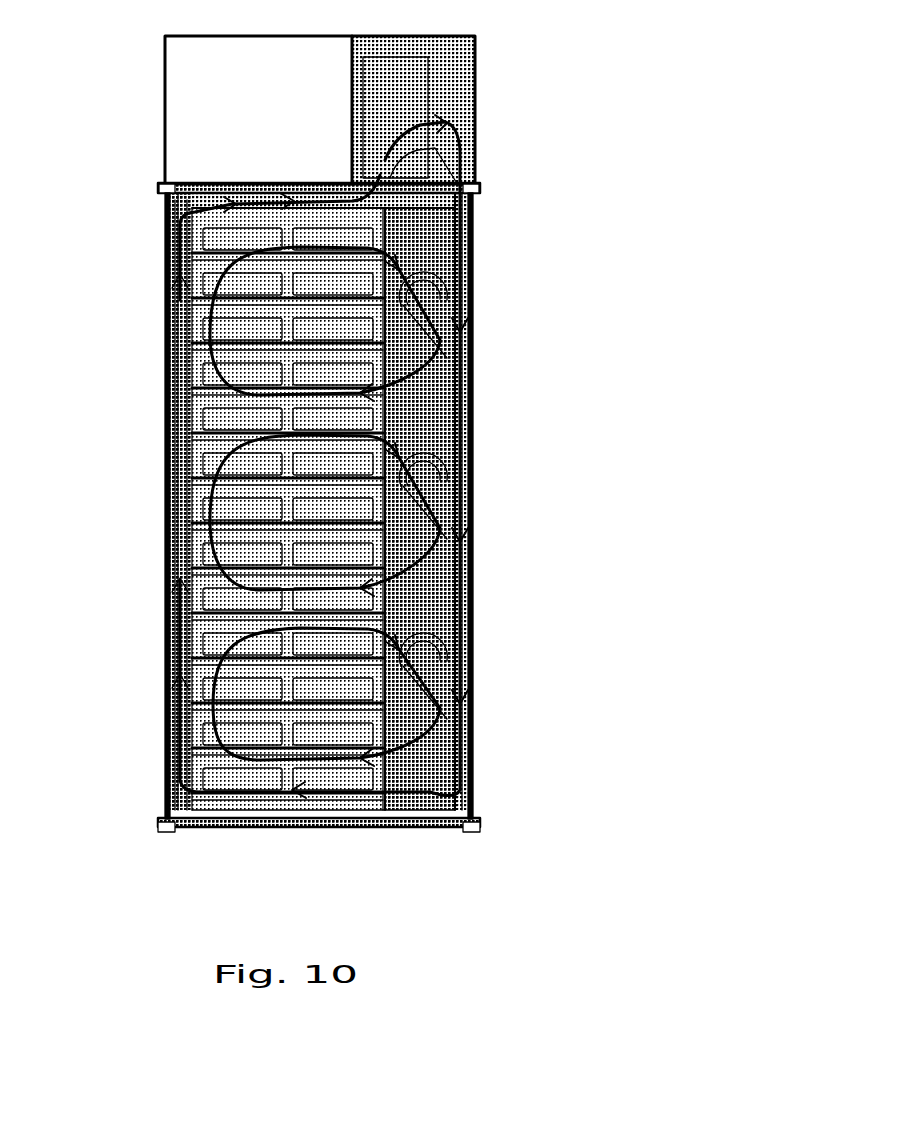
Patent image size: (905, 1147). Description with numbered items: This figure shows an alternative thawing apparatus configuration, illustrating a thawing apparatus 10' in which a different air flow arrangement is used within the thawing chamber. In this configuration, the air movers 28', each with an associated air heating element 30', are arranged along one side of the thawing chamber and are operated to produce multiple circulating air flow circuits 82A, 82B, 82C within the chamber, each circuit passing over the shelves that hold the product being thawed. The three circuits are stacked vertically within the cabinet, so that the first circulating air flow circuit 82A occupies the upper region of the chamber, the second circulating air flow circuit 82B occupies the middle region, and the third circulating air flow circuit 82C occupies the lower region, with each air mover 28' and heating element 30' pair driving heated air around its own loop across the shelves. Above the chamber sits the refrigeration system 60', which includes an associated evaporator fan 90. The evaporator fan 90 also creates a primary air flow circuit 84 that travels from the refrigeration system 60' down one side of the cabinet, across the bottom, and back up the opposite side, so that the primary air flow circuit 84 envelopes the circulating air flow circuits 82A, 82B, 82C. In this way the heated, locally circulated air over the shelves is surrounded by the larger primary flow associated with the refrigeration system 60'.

The thawing apparatus 10' is at (579, 46).
The refrigeration system 60' is at (265, 114).
The evaporator fan 90 is at (436, 150).
The primary air flow circuit 84 is at (187, 223).
The air movers 28' is at (483, 468).
The air heating elements 30' is at (488, 534).
The circulating air flow circuit 82A is at (213, 322).
The circulating air flow circuit 82B is at (190, 540).
The circulating air flow circuit 82C is at (210, 727).